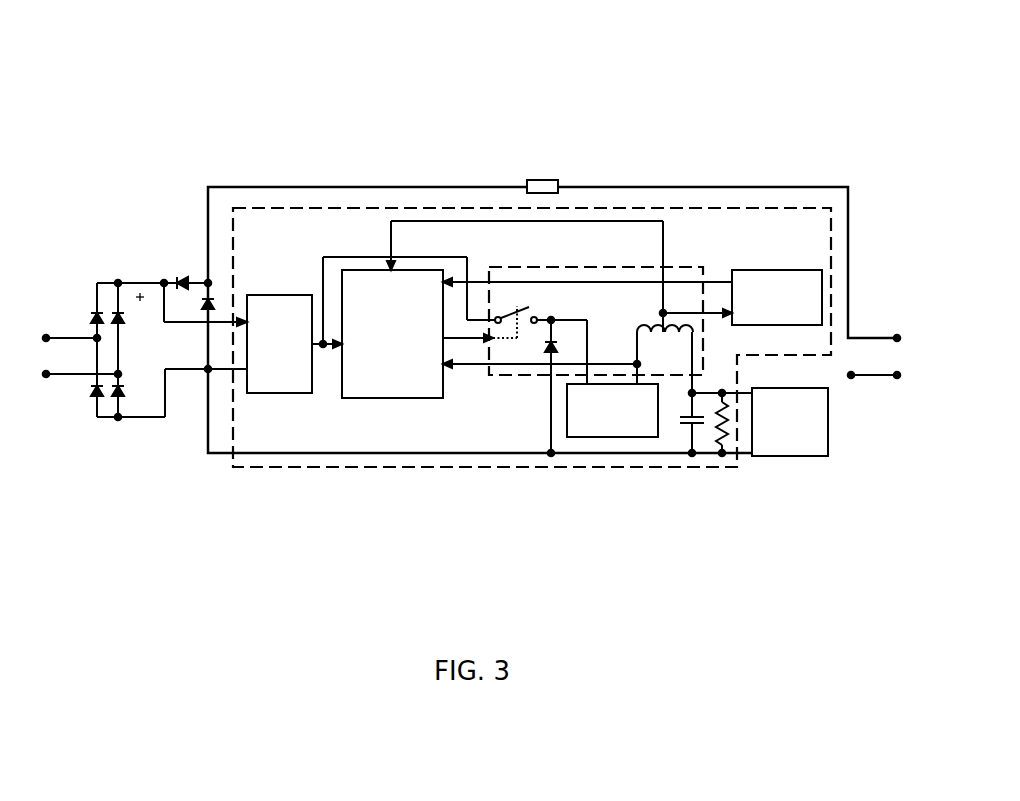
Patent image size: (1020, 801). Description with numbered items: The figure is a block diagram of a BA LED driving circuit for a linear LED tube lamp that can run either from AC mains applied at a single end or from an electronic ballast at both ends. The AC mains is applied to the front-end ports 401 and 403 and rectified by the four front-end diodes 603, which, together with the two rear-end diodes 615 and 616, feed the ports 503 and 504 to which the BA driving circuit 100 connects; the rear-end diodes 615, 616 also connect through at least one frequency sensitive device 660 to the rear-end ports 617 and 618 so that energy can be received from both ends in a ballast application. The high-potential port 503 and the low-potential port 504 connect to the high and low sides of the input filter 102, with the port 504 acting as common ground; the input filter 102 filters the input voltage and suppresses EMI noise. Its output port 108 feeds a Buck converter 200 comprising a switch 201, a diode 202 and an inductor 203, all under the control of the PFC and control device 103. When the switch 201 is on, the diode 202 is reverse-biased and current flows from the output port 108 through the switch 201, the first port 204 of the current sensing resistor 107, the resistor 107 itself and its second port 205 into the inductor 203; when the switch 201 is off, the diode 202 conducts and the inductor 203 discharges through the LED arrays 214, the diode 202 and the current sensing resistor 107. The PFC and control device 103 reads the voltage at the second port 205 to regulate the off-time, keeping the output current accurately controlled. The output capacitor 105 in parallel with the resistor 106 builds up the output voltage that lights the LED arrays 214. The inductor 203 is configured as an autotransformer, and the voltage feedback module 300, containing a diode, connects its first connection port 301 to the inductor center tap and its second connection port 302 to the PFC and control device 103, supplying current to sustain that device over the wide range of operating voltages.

The BA driving circuit 100 is at (445, 190).
The frequency sensitive device 660 is at (540, 178).
The Buck converter 200 is at (591, 250).
The four front-end diodes 603 is at (100, 268).
The port 401 is at (95, 336).
The port 403 is at (126, 380).
The port 503 is at (163, 280).
The rear-end diode 615 is at (183, 272).
The rear-end diode 616 is at (212, 292).
The port 504 is at (206, 374).
The input filter 102 is at (272, 294).
The output port 108 is at (321, 340).
The PFC and control device 103 is at (375, 267).
The switch 201 is at (511, 322).
The first port 204 is at (549, 316).
The diode 202 is at (549, 354).
The current sensing resistor 107 is at (617, 439).
The second port 205 is at (633, 360).
The inductor 203 is at (648, 323).
The output capacitor 105 is at (686, 428).
The resistor 106 is at (727, 437).
The LED arrays 214 is at (798, 458).
The voltage feedback module 300 is at (787, 263).
The first connection port 301 is at (715, 310).
The second connection port 302 is at (693, 281).
The port 617 is at (897, 330).
The port 618 is at (898, 383).